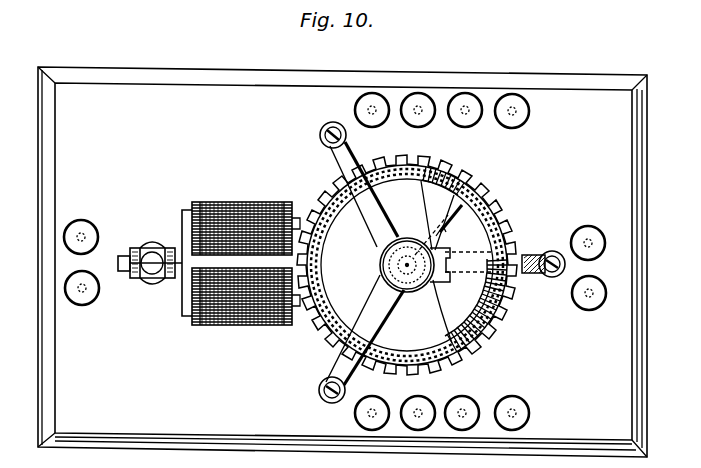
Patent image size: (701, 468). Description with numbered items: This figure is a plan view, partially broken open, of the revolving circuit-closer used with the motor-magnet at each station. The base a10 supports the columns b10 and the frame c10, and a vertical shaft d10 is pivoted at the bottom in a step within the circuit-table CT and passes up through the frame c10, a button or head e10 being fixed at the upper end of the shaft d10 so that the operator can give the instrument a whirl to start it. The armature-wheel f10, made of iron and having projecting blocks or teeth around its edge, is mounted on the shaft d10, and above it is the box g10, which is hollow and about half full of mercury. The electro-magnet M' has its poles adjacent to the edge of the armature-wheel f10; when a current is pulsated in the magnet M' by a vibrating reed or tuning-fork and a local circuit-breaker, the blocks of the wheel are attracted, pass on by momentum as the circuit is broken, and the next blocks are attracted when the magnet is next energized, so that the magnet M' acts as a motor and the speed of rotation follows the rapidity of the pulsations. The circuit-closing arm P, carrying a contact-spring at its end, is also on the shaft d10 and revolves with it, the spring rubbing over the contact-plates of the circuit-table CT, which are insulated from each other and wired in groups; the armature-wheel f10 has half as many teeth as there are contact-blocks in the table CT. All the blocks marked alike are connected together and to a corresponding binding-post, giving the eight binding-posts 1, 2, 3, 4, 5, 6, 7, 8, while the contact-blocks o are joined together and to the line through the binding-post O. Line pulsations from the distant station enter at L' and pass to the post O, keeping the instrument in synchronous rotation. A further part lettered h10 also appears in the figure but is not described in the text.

The base a10 is at (342, 262).
The columns b10 is at (543, 256).
The frame c10 is at (364, 194).
The vertical shaft d10 is at (392, 266).
The button or head e10 is at (403, 265).
The armature-wheel f10 is at (347, 339).
The box g10 is at (407, 265).
The upper pivot h10 is at (319, 135).
The electro-magnet M' is at (209, 253).
The line entry terminal L' is at (334, 233).
The binding-post O is at (342, 290).
The circuit-closing arm P is at (439, 211).
The circuit-table CT is at (470, 302).
The binding-post 1 is at (372, 99).
The binding-post 2 is at (418, 99).
The binding-post 3 is at (465, 99).
The binding-post 4 is at (512, 99).
The binding-post 5 is at (512, 405).
The binding-post 6 is at (462, 405).
The binding-post 7 is at (418, 405).
The binding-post 8 is at (372, 405).